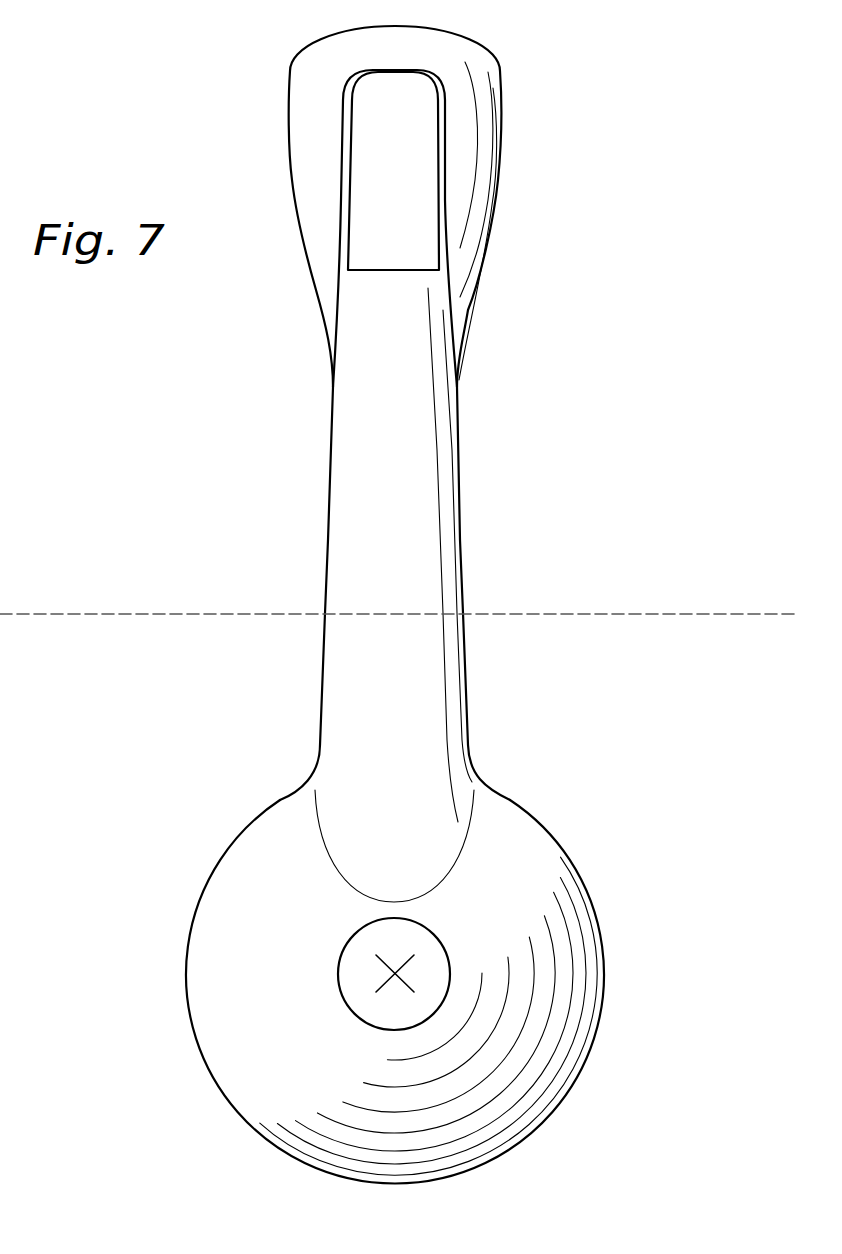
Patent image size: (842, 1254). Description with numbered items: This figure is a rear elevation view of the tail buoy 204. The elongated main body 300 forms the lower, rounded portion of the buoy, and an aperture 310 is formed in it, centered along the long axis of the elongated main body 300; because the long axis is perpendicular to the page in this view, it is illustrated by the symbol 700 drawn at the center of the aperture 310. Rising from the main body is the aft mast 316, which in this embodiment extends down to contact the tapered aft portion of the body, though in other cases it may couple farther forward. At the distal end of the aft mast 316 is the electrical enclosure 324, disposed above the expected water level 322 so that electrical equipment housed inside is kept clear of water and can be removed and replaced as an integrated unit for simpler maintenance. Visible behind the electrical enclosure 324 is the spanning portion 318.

The tail buoy 204 is at (192, 373).
The elongated main body 300 is at (227, 853).
The aperture 310 is at (370, 938).
The aft mast 316 is at (420, 492).
The spanning portion 318 is at (488, 55).
The expected water level 322 is at (672, 613).
The electrical enclosure 324 is at (415, 200).
The symbol 700 is at (393, 973).